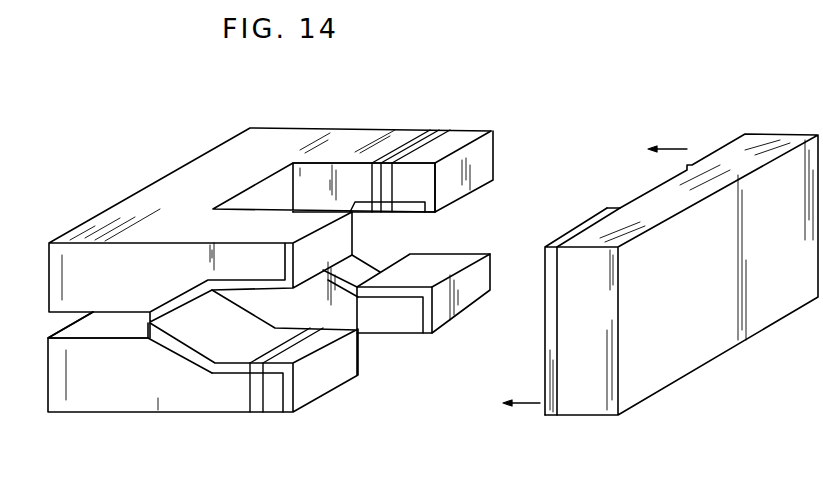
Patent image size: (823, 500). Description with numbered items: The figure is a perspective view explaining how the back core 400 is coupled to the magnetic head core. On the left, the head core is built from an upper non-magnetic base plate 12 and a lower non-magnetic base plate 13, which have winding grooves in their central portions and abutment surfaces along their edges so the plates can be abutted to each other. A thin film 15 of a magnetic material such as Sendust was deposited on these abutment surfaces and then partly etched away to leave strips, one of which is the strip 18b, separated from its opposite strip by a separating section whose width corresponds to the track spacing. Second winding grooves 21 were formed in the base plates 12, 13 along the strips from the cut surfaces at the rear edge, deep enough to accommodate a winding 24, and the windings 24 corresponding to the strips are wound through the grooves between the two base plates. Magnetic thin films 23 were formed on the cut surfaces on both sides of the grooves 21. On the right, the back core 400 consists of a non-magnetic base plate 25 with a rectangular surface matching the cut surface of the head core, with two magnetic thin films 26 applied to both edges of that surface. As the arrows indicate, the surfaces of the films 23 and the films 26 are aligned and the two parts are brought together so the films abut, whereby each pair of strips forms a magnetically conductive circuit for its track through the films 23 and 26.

The non-magnetic base plate 12 is at (266, 142).
The second winding groove 21 is at (318, 184).
The magnetic thin film 23 is at (481, 168).
The winding 24 is at (453, 131).
The magnetic thin film 15 is at (405, 207).
The non-magnetic base plate 13 is at (108, 402).
The strip 18b is at (93, 317).
The non-magnetic base plate 25 is at (597, 407).
The magnetic thin film 26 is at (547, 417).
The back core 400 is at (672, 303).